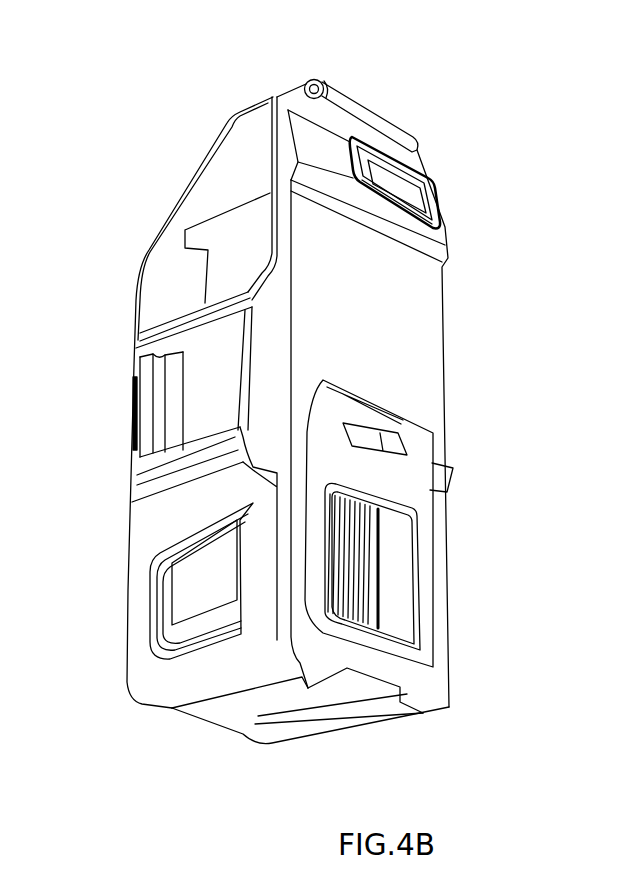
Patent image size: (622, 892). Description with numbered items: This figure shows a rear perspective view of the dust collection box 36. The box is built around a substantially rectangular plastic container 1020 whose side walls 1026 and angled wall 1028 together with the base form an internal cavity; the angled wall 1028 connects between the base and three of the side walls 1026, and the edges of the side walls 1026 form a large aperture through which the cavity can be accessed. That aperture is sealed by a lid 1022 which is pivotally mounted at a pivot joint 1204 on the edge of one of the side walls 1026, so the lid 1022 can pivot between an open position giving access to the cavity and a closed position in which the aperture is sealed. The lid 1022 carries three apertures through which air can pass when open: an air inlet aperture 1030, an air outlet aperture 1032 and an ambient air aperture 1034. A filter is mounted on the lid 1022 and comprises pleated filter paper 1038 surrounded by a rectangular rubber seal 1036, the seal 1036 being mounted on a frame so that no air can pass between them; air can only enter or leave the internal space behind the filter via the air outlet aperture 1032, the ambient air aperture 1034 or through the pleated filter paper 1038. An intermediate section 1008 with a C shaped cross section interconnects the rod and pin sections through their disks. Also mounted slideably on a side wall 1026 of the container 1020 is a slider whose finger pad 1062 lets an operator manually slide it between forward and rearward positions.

The rectangular plastic container 1020 is at (147, 402).
The lid 1022 is at (422, 337).
The side walls 1026 is at (177, 258).
The angled wall 1028 is at (190, 177).
The pivot joint 1204 is at (372, 113).
The air inlet aperture 1030 is at (412, 190).
The finger pad 1062 is at (110, 404).
The ambient air aperture 1034 is at (404, 421).
The intermediate section 1008 is at (380, 432).
The air outlet aperture 1032 is at (410, 588).
The rectangular rubber seal 1036 is at (385, 597).
The pleated filter paper 1038 is at (355, 583).
The dust collection box 36 is at (187, 738).